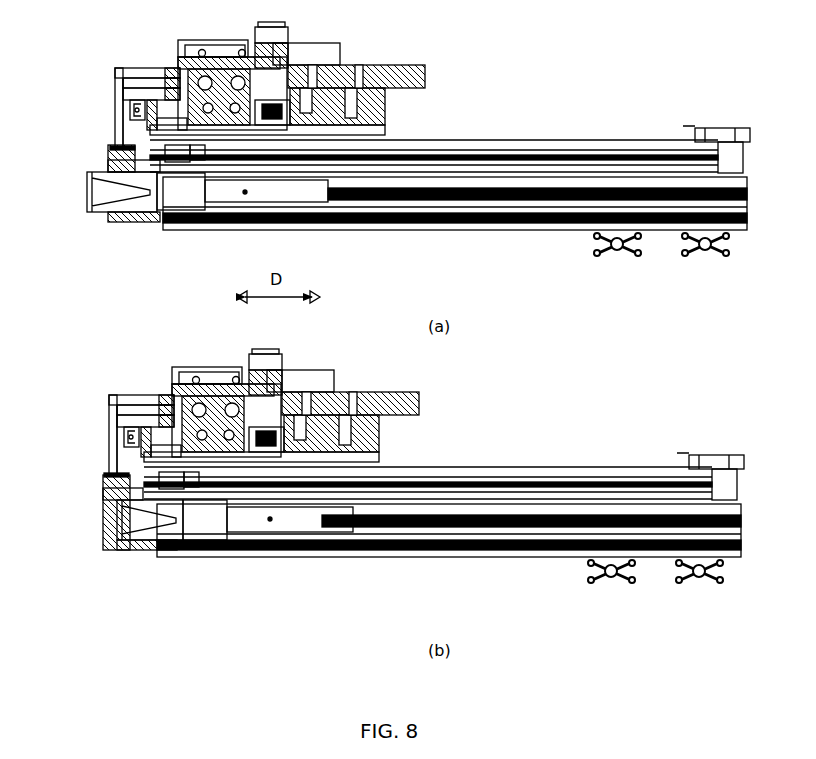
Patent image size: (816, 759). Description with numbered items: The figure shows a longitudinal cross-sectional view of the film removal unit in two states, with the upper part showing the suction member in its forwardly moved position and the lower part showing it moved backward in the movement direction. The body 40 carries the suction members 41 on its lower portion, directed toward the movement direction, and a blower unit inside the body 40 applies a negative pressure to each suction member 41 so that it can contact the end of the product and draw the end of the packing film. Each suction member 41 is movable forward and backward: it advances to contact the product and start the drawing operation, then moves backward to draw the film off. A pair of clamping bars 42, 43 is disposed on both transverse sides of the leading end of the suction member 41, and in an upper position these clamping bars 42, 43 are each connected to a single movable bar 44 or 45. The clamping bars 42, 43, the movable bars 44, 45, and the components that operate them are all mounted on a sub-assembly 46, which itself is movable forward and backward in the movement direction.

The body 40 is at (567, 274).
The suction member 41 is at (88, 216).
The clamping bar 42 is at (104, 121).
The clamping bar 43 is at (134, 273).
The movable bar 44 is at (143, 70).
The movable bar 45 is at (160, 80).
The sub-assembly 46 is at (416, 108).